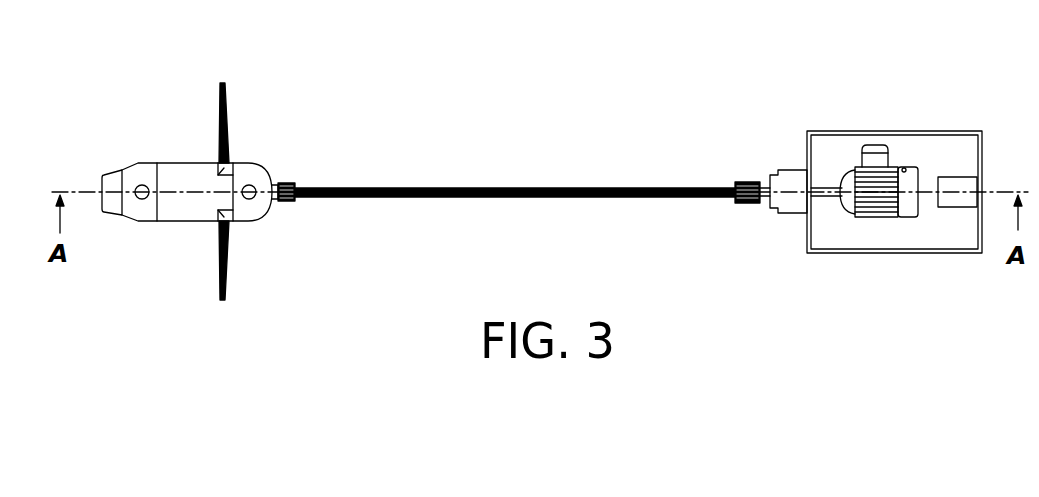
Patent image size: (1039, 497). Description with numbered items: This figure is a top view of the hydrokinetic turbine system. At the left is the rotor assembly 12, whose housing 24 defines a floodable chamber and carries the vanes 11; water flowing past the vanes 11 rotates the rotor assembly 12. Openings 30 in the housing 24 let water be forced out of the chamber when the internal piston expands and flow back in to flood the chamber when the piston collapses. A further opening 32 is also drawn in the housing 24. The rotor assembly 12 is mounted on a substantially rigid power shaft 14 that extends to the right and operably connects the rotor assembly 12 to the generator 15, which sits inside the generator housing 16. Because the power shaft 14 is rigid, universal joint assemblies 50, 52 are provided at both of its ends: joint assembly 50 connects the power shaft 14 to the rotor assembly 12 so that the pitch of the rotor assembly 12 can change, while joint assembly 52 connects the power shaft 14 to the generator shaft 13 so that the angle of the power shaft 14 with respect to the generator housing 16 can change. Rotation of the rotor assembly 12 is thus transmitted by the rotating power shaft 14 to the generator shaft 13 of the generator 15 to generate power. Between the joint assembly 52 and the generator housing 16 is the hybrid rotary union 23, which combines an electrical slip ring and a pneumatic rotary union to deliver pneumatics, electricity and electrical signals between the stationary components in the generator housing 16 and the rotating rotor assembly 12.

The vanes 11 is at (222, 124).
The rotor assembly 12 is at (158, 93).
The generator shaft 13 is at (823, 200).
The power shaft 14 is at (467, 188).
The generator 15 is at (910, 167).
The generator housing 16 is at (840, 131).
The hybrid rotary union 23 is at (790, 170).
The housing 24 is at (250, 161).
The outlet openings 30 is at (142, 200).
The rear pin hole 32 is at (253, 186).
The universal joint assembly 50 is at (282, 210).
The universal joint assembly 52 is at (745, 180).